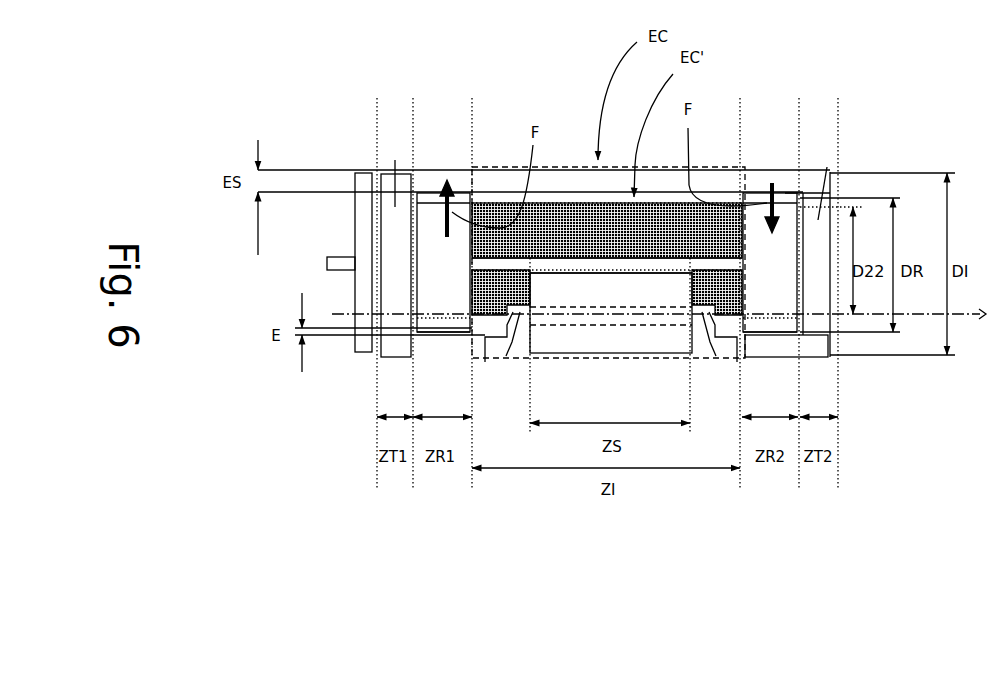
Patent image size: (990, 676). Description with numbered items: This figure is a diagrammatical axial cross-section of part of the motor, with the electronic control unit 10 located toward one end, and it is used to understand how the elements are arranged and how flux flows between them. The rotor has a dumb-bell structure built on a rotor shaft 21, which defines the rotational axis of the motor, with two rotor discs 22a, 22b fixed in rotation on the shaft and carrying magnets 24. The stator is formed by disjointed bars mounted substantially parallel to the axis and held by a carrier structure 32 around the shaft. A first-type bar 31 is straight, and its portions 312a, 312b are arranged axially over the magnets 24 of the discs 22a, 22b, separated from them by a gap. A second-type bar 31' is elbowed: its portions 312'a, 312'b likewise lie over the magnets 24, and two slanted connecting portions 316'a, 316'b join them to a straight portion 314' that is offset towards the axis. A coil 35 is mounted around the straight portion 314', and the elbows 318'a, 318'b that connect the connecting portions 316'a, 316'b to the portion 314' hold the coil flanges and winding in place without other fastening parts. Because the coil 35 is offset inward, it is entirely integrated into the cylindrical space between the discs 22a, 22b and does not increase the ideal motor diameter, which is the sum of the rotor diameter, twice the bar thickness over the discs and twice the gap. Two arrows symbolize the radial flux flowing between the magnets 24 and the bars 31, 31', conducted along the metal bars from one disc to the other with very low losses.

The electronic control unit 10 is at (365, 180).
The rotor shaft 21 is at (337, 262).
The rotor disc 22a is at (427, 347).
The rotor disc 22b is at (772, 320).
The magnets 24 is at (467, 167).
The stator bar of first type 31 is at (607, 160).
The stator bar of second type 31' is at (491, 345).
The carrier structure 32 is at (395, 207).
The bar portion 312a is at (428, 193).
The bar portion 312b is at (788, 193).
The bar portion 312'a is at (365, 405).
The bar portion 312'b is at (841, 398).
The straight portion 314' is at (611, 339).
The coil 35 is at (645, 336).
The connecting portion 316'a is at (489, 356).
The connecting portion 316'b is at (716, 362).
The elbow 318'a is at (513, 347).
The elbow 318'b is at (695, 351).